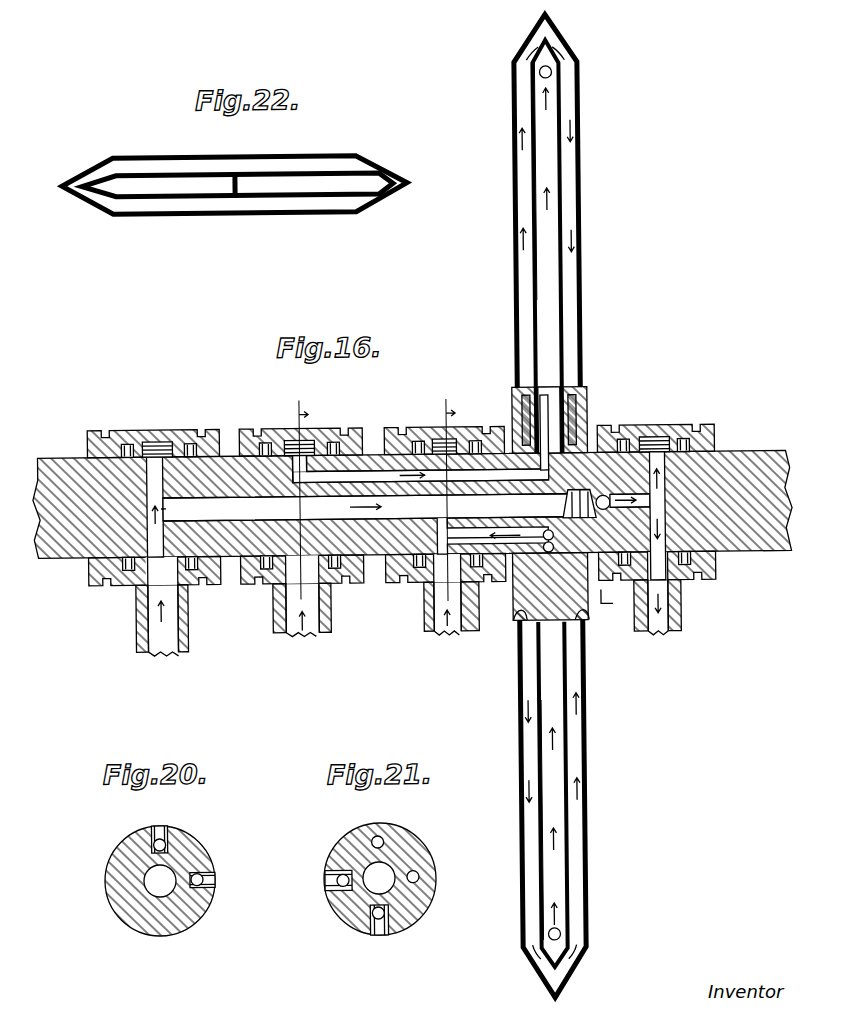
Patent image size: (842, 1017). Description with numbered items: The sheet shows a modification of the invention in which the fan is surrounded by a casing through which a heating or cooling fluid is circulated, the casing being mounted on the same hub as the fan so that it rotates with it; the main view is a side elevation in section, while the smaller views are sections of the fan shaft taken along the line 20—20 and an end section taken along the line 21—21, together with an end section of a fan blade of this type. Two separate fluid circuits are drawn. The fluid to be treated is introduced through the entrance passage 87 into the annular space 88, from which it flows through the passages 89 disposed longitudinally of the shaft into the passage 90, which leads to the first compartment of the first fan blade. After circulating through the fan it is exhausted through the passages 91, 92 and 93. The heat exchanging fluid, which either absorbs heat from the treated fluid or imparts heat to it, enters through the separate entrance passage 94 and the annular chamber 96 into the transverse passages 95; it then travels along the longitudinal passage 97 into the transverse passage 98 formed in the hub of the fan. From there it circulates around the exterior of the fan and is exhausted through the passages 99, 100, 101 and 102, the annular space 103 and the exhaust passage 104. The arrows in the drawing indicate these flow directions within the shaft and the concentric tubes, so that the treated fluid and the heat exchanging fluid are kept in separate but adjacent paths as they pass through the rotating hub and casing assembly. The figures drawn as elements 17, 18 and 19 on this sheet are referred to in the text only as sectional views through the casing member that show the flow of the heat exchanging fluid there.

In FIG. 16, the inner tube 17 is at (519, 344).
In FIG. 16, the outer tube 18 is at (585, 332).
In FIG. 16, the annular passage 19 is at (517, 311).
In FIG. 16, the section line 20— 20 is at (311, 499).
In FIG. 16, the section line 21— 21 is at (449, 497).
In FIG. 16, the entrance passage 87 is at (305, 636).
In FIG. 16, the annular space 88 is at (312, 438).
In FIG. 16, the passages 89 is at (368, 468).
In FIG. 20, the passages 89 is at (165, 843).
In FIG. 21, the passages 89 is at (385, 838).
In FIG. 16, the passage 90 is at (560, 420).
In FIG. 16, the exhaust passage 91 is at (648, 434).
In FIG. 16, the exhaust passage 92 is at (545, 542).
In FIG. 21, the exhaust passage 92 is at (340, 885).
In FIG. 16, the exhaust passage 93 is at (452, 632).
In FIG. 16, the separate entrance passage 94 is at (172, 640).
In FIG. 16, the transverse passages 95 is at (160, 458).
In FIG. 16, the annular chamber 96 is at (156, 436).
In FIG. 16, the longitudinal passage 97 is at (222, 505).
In FIG. 20, the longitudinal passage 97 is at (156, 893).
In FIG. 21, the longitudinal passage 97 is at (370, 892).
In FIG. 16, the transverse passage 98 is at (518, 412).
In FIG. 16, the exhaust passage 99 is at (575, 393).
In FIG. 16, the exhaust passage 100 is at (518, 624).
In FIG. 16, the exhaust passage 101 is at (586, 620).
In FIG. 16, the exhaust passage 102 is at (632, 530).
In FIG. 16, the annular space 103 is at (680, 424).
In FIG. 16, the exhaust passage 104 is at (663, 636).